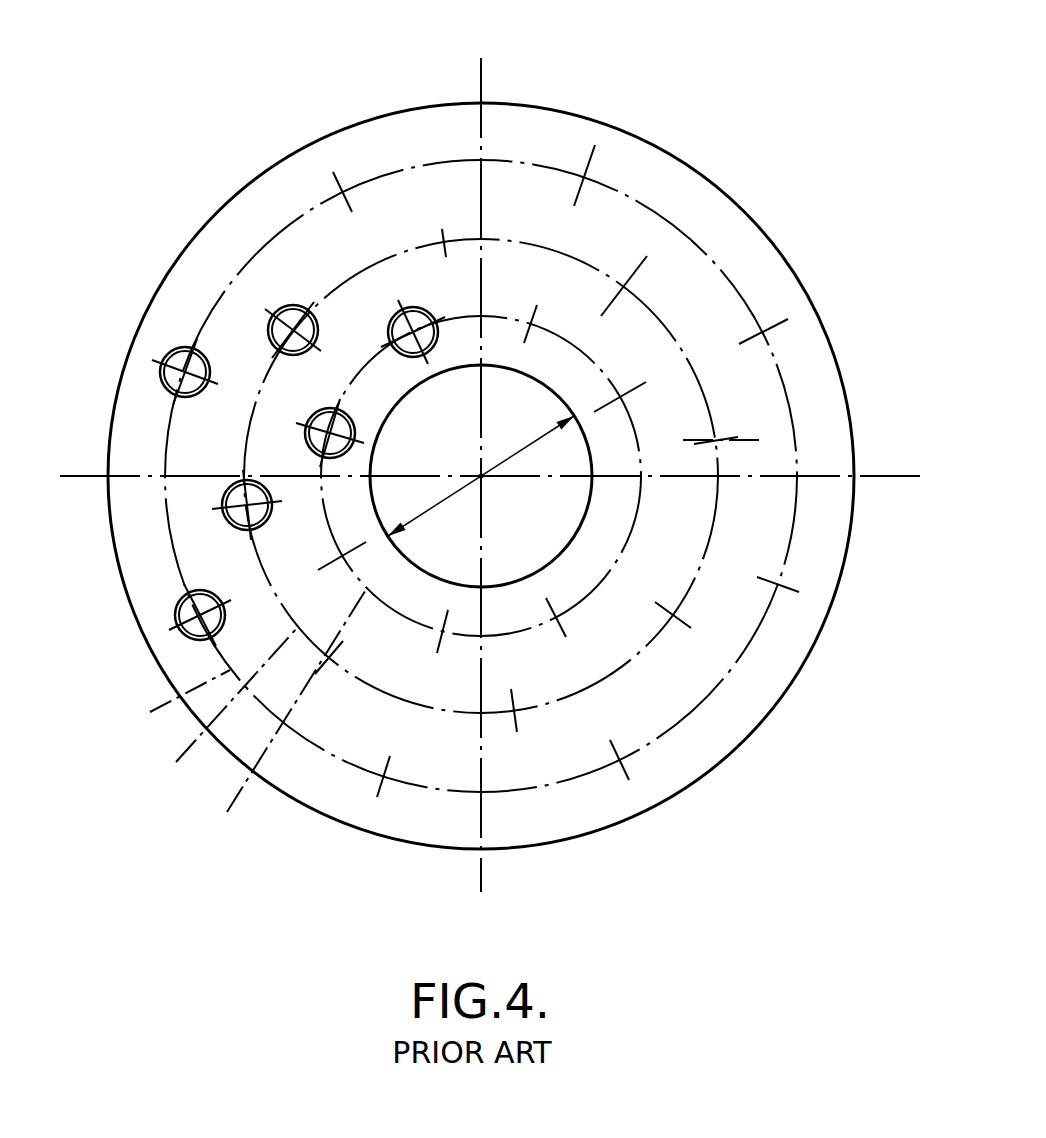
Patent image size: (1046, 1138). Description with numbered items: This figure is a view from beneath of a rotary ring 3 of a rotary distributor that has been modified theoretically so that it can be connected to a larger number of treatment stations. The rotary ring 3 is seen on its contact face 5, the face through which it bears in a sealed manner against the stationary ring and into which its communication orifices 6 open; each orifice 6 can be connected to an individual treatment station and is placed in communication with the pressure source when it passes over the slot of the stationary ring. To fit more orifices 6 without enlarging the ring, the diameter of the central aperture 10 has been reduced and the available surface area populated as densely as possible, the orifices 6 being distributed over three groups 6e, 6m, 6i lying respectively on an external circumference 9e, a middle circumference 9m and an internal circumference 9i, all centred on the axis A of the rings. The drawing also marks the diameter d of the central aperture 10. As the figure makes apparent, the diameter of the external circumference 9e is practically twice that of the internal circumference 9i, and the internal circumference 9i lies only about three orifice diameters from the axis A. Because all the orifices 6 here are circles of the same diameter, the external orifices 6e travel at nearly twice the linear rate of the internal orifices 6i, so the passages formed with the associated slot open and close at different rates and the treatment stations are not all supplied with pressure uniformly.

The rotary ring 3 is at (657, 133).
The contact face 5 is at (562, 130).
The communication orifices 6 is at (532, 296).
The external orifices 6e is at (161, 364).
The middle orifices 6m is at (275, 313).
The internal orifices 6i is at (397, 313).
The external circumference 9e is at (170, 710).
The middle circumference 9m is at (221, 716).
The internal circumference 9i is at (285, 720).
The central aperture 10 is at (548, 465).
The bore diameter d is at (525, 443).
The axis A is at (481, 476).